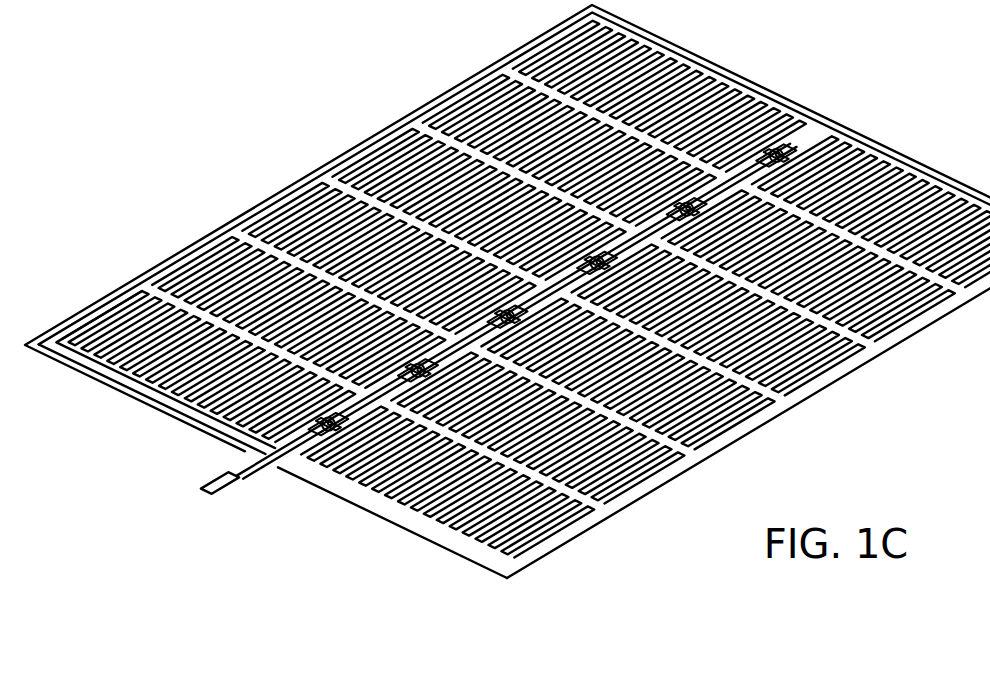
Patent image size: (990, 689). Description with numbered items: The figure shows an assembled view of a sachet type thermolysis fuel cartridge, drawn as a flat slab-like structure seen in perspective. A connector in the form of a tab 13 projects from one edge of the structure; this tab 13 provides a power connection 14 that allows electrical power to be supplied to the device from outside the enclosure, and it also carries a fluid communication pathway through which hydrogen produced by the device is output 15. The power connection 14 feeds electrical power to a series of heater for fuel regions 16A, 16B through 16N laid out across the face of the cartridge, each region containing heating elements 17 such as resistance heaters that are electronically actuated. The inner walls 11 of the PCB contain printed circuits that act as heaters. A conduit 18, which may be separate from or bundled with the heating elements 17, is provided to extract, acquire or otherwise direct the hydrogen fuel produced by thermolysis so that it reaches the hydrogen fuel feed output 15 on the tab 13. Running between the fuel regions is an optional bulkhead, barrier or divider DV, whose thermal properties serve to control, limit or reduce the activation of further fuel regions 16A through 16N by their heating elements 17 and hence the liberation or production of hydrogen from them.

The inner walls 11 is at (875, 141).
The tab 13 is at (252, 478).
The power connection 14 is at (225, 484).
The hydrogen fuel feed output 15 is at (210, 472).
The heater for fuel region 16A is at (379, 526).
The heater for fuel region 16B is at (612, 460).
The heater for fuel region 16N is at (102, 328).
The heating elements 17 is at (533, 537).
The conduit 18 is at (917, 322).
The divider DV is at (800, 306).